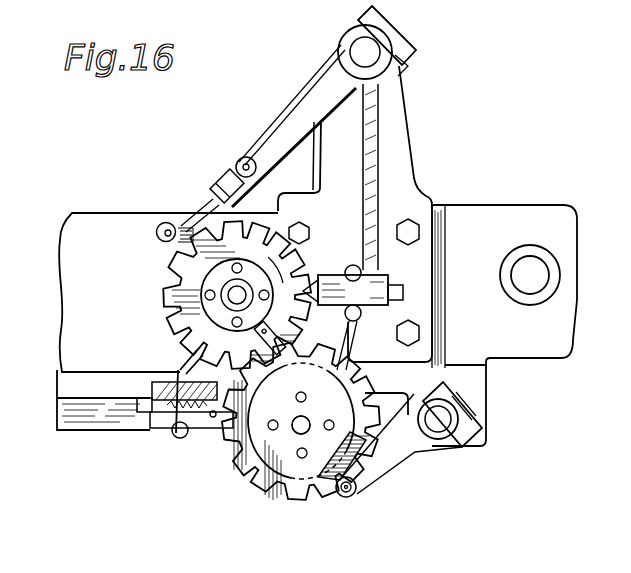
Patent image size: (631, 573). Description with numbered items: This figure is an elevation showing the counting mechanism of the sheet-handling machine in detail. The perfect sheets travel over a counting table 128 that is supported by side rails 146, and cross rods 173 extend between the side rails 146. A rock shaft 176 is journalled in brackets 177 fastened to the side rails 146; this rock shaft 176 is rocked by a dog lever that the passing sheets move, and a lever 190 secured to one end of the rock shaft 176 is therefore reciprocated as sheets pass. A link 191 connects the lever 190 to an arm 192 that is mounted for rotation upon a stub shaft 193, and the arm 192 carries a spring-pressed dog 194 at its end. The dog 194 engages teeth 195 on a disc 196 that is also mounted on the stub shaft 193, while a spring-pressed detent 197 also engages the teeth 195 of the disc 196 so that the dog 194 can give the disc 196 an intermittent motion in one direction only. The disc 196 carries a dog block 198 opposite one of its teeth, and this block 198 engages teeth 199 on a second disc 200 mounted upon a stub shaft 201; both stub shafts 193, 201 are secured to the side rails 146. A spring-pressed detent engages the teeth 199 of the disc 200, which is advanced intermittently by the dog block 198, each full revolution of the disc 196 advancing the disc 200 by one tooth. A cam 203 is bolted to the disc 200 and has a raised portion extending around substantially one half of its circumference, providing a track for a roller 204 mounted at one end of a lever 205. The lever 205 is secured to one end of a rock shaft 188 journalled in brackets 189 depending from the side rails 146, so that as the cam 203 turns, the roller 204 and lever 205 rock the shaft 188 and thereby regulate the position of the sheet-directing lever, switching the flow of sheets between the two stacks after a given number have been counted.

The counting table 128 is at (77, 383).
The side rails 146 is at (517, 213).
The cross rods 173 is at (545, 275).
The rock shaft 176 is at (365, 53).
The brackets 177 is at (400, 155).
The rock shaft 188 is at (440, 420).
The brackets 189 is at (477, 388).
The lever 190 is at (313, 92).
The link 191 is at (233, 168).
The arm 192 is at (173, 244).
The stub shaft 193 is at (233, 297).
The spring-pressed dog 194 is at (187, 210).
The teeth 195 is at (160, 302).
The disc 196 is at (240, 230).
The spring-pressed detent 197 is at (304, 292).
The dog block 198 is at (254, 326).
The teeth 199 is at (242, 483).
The second disc 200 is at (298, 470).
The stub shaft 201 is at (268, 487).
The cam 203 is at (365, 462).
The roller 204 is at (352, 502).
The lever 205 is at (405, 450).